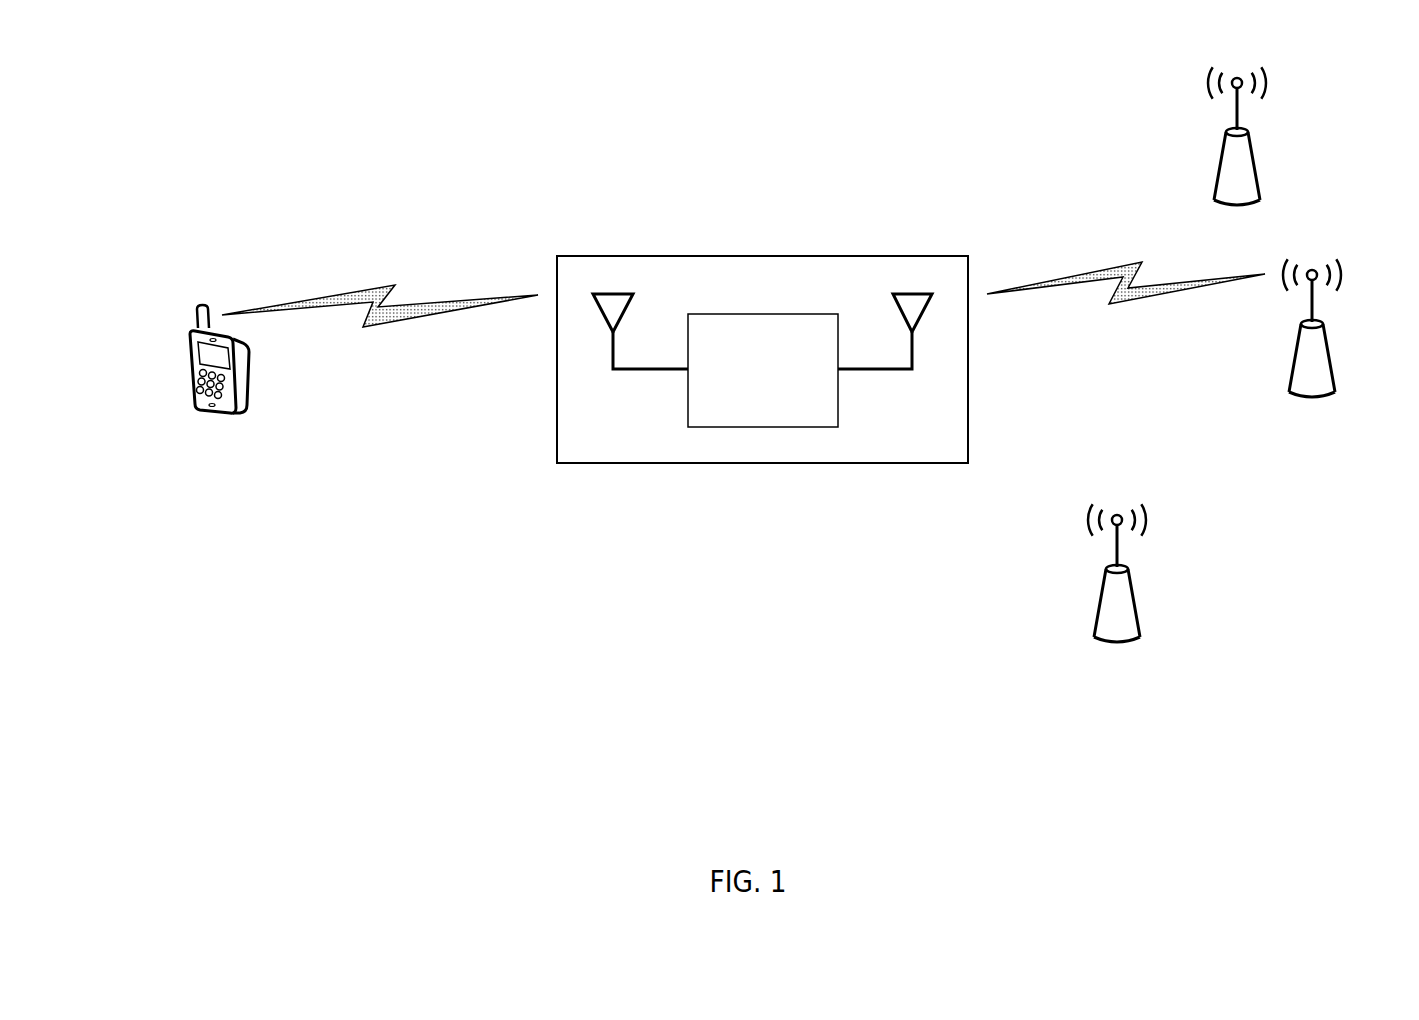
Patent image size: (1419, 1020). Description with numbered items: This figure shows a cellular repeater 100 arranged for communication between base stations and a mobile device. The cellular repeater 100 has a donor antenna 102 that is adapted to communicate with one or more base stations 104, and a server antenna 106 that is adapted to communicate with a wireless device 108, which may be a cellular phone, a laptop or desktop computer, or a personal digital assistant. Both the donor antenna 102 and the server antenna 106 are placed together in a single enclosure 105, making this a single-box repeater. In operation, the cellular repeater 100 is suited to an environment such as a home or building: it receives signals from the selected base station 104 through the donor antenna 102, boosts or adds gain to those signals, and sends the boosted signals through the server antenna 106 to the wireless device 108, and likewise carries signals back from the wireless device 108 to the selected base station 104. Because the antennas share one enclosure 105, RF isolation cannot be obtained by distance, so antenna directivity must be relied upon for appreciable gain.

The cellular repeater 100 is at (763, 427).
The donor antenna 102 is at (900, 317).
The base station 104 is at (1220, 162).
The single enclosure 105 is at (632, 465).
The server antenna 106 is at (625, 317).
The wireless device 108 is at (173, 393).